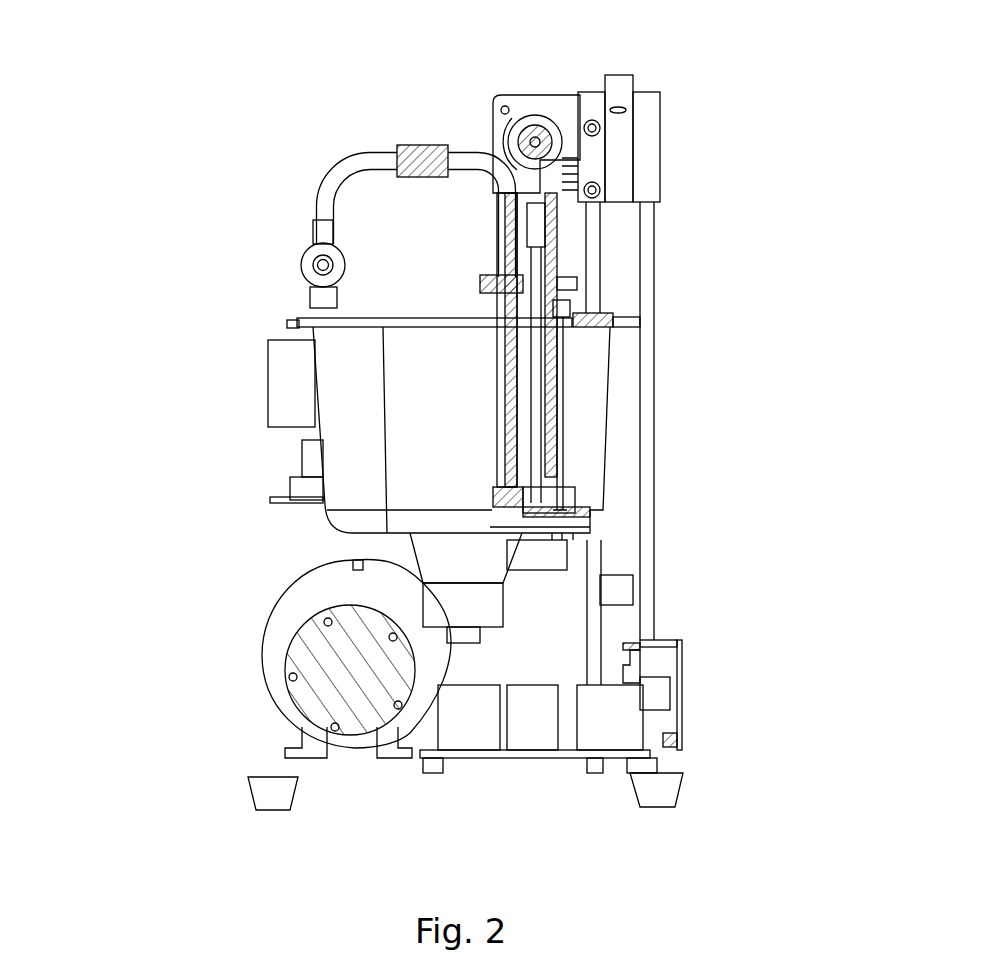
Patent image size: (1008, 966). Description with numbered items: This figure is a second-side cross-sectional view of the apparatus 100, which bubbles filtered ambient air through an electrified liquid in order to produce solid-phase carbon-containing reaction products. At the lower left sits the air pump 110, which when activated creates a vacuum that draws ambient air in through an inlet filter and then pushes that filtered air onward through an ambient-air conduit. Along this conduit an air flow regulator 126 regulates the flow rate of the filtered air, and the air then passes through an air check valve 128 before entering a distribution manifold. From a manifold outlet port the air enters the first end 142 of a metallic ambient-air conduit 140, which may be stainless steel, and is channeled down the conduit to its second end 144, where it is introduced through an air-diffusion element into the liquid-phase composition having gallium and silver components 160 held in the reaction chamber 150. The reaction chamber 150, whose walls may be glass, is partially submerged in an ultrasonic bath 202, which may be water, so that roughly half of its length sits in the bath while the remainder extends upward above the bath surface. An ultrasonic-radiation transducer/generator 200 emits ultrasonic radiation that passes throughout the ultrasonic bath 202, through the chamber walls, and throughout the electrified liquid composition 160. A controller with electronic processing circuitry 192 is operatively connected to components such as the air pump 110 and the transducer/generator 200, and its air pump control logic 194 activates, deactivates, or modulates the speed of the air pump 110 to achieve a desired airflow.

The apparatus 100 is at (185, 27).
The air pump 110 is at (313, 598).
The air flow regulator 126 is at (306, 245).
The air check valve 128 is at (414, 134).
The metallic ambient-air conduit 140 is at (548, 359).
The metallic-ambient-air-conduit first end 142 is at (538, 259).
The metallic-ambient-air-conduit second end 144 is at (540, 458).
The reaction chamber 150 is at (508, 365).
The liquid-phase composition having gallium and silver components 160 is at (511, 425).
The electronic processing circuitry 192 is at (495, 280).
The air pump control logic 194 is at (478, 518).
The ultrasonic-radiation transducer/generator 200 is at (477, 590).
The ultrasonic bath 202 is at (583, 428).